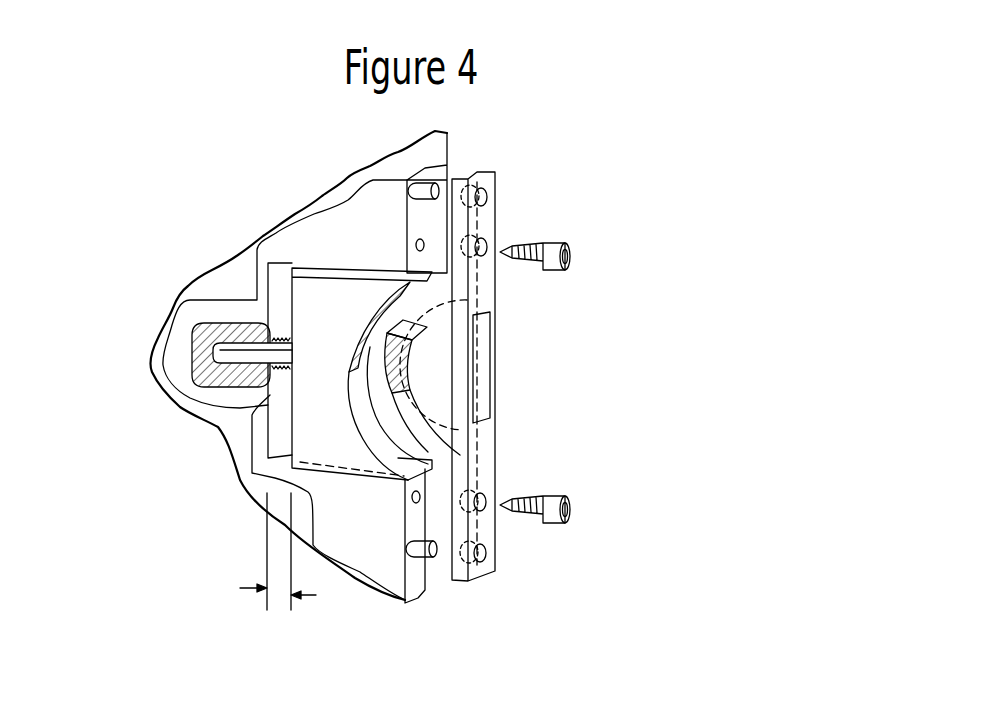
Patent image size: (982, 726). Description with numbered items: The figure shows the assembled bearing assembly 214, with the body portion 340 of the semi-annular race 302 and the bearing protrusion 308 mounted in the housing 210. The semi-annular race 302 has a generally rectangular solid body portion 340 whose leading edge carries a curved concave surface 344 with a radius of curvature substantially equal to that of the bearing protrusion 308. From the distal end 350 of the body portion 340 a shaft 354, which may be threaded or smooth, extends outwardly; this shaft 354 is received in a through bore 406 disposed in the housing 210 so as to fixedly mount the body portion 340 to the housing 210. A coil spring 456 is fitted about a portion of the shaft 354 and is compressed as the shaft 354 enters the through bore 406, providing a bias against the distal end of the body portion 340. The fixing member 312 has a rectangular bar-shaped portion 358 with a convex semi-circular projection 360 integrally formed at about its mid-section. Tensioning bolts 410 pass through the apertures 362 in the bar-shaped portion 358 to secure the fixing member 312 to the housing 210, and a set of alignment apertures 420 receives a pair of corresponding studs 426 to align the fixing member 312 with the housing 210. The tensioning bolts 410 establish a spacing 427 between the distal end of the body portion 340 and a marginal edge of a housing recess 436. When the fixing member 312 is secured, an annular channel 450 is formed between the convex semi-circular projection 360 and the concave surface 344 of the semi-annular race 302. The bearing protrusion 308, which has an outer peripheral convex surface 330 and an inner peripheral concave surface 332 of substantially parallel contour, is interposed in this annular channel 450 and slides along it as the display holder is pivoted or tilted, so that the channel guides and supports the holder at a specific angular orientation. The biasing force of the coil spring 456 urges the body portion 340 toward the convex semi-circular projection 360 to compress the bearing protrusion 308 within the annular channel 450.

The housing 210 is at (373, 190).
The bearing assembly 214 is at (357, 596).
The semi-annular race 302 is at (308, 478).
The bearing protrusion 308 is at (473, 430).
The fixing member 312 is at (490, 532).
The outer peripheral convex surface 330 is at (288, 286).
The inner peripheral concave surface 332 is at (445, 377).
The body portion 340 is at (303, 454).
The concave surface 344 is at (348, 380).
The distal end 350 is at (280, 435).
The shaft 354 is at (228, 347).
The bar-shaped portion 358 is at (493, 415).
The convex semi-circular projection 360 is at (452, 377).
The apertures 362 is at (487, 247).
The through bore 406 is at (262, 372).
The tensioning bolts 410 is at (558, 272).
The alignment apertures 420 is at (487, 197).
The studs 426 is at (434, 183).
The spacing 427 is at (278, 596).
The housing recess 436 is at (340, 284).
The annular channel 450 is at (418, 305).
The coil spring 456 is at (275, 332).